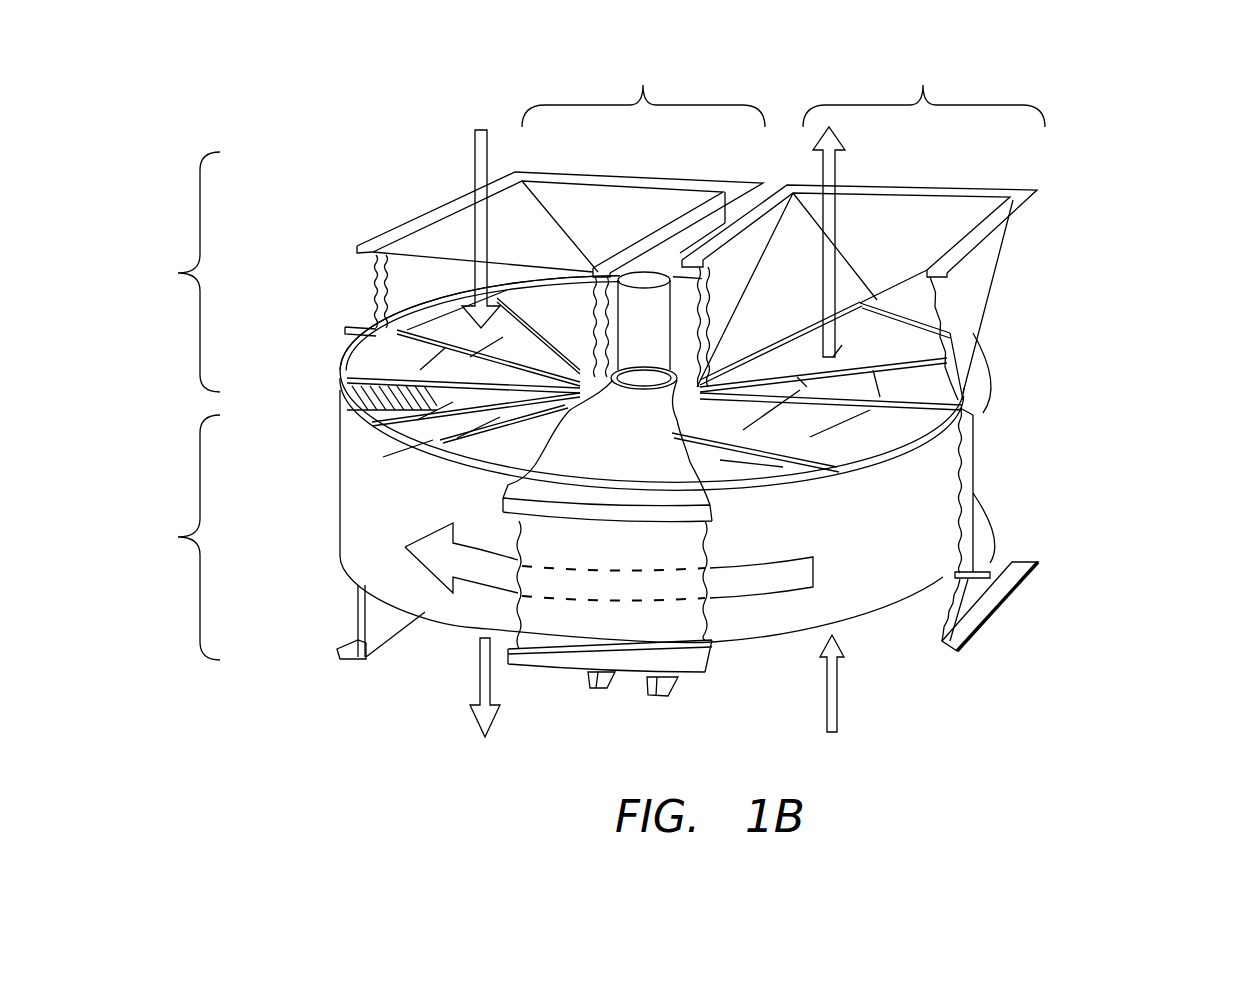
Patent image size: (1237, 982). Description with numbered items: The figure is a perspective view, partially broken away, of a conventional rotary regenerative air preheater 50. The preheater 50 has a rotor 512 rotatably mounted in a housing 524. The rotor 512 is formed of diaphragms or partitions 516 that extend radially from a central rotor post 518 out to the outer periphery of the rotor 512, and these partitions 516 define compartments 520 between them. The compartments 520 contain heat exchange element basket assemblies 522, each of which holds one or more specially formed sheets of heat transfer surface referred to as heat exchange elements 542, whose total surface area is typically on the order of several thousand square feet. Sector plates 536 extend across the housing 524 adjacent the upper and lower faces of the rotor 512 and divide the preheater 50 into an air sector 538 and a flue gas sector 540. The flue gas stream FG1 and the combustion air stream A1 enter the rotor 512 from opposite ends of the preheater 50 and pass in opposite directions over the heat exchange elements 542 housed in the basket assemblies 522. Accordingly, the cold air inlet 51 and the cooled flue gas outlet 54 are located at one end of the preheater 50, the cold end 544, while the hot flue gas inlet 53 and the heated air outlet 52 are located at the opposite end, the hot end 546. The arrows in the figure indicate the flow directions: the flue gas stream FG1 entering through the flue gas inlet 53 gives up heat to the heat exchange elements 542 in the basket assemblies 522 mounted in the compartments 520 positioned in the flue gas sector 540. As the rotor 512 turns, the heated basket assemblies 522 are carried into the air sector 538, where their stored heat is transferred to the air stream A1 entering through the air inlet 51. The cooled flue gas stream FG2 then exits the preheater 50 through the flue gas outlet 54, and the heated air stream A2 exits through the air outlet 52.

The rotary regenerative air preheater 50 is at (1128, 105).
The cold air inlet 51 is at (910, 628).
The heated air outlet 52 is at (905, 218).
The hot flue gas inlet 53 is at (590, 196).
The cooled flue gas outlet 54 is at (385, 622).
The rotor 512 is at (350, 530).
The partitions 516 is at (420, 448).
The rotor post 518 is at (655, 315).
The compartments 520 is at (475, 478).
The heat exchange element basket assemblies 522 is at (392, 355).
The housing 524 is at (978, 445).
The sector plates 536 is at (642, 466).
The air sector 538 is at (924, 90).
The flue gas sector 540 is at (643, 90).
The heat exchange elements 542 is at (392, 402).
The cold end 544 is at (172, 537).
The hot end 546 is at (172, 272).
The flue gas stream FG1 is at (470, 150).
The cold flue gas stream FG2 is at (478, 706).
The combustion air stream A1 is at (840, 697).
The heated air stream A2 is at (838, 166).